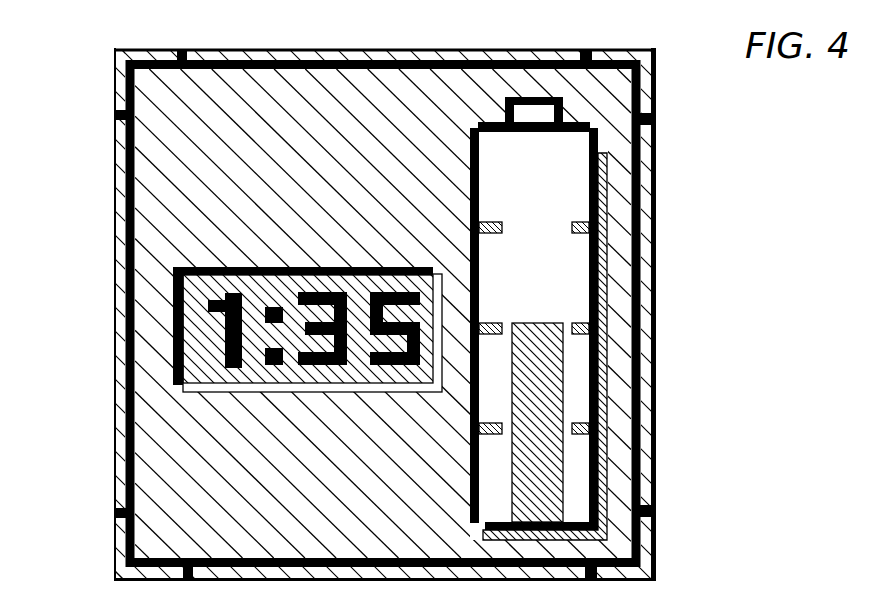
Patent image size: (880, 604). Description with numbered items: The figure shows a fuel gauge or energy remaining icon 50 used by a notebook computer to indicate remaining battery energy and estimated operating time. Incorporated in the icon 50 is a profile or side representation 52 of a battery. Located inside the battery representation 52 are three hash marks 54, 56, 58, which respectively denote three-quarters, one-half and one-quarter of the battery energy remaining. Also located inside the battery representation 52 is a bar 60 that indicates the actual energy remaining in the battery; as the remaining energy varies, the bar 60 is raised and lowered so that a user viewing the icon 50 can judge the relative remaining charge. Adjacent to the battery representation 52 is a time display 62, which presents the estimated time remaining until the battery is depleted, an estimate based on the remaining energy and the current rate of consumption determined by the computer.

The energy remaining icon 50 is at (108, 215).
The battery representation 52 is at (604, 160).
The hash mark 54 is at (580, 222).
The hash mark 56 is at (580, 323).
The hash mark 58 is at (580, 425).
The bar 60 is at (522, 490).
The time display 62 is at (310, 267).